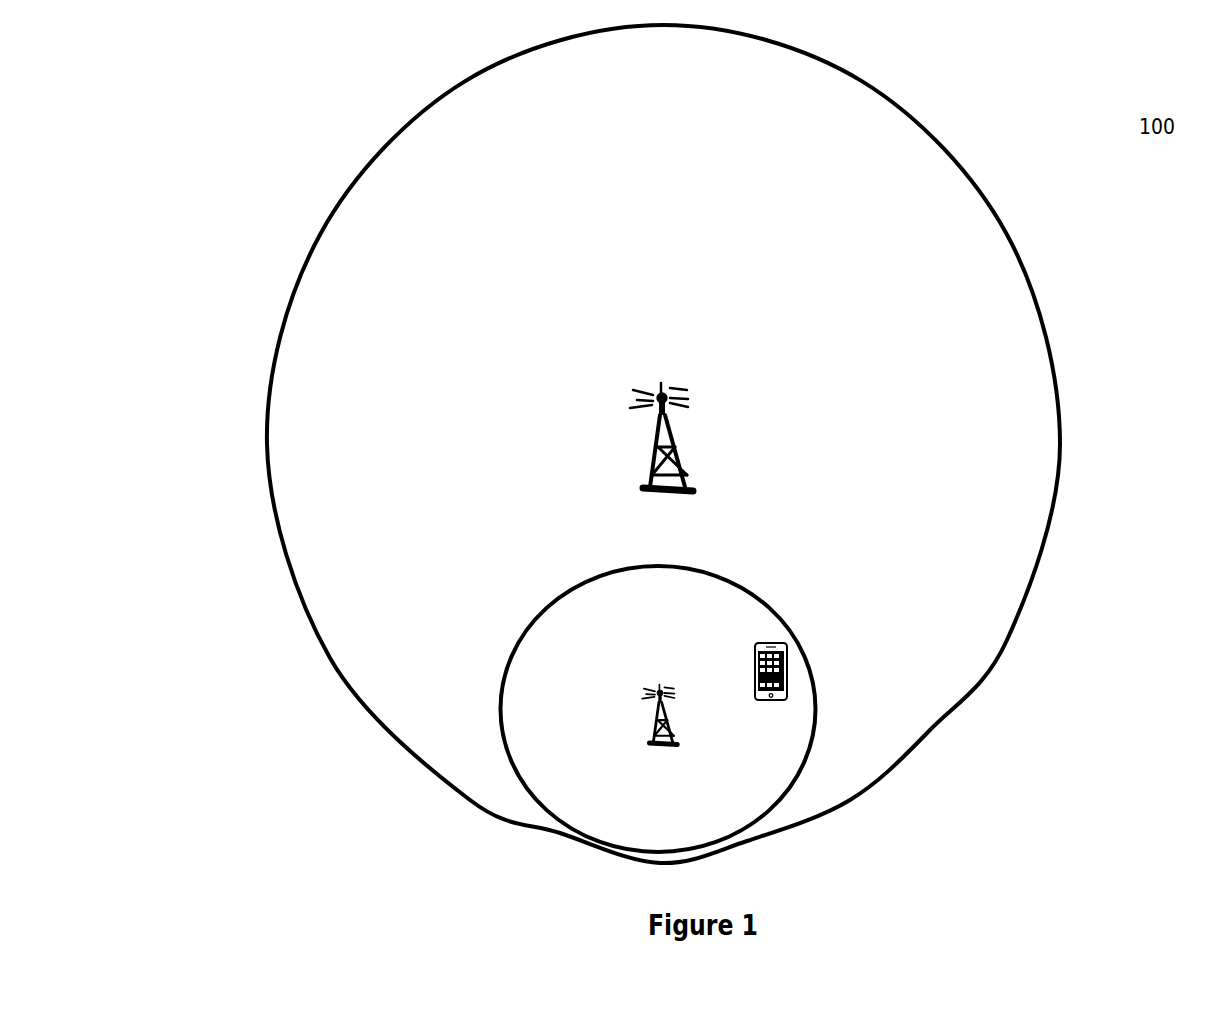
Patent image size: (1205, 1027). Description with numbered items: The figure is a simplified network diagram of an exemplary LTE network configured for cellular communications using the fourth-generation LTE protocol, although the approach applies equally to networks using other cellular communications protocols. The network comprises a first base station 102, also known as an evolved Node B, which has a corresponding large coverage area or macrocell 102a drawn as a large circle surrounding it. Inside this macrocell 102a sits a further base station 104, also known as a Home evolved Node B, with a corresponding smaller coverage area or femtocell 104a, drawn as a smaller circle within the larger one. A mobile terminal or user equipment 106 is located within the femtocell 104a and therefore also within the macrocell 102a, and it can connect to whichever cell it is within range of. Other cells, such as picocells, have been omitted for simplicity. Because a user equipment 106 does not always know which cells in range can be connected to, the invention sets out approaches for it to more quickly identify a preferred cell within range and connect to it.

The first base station 102 is at (656, 378).
The macrocell 102a is at (473, 70).
The further base station 104 is at (660, 688).
The femtocell 104a is at (578, 583).
The user equipment 106 is at (757, 642).